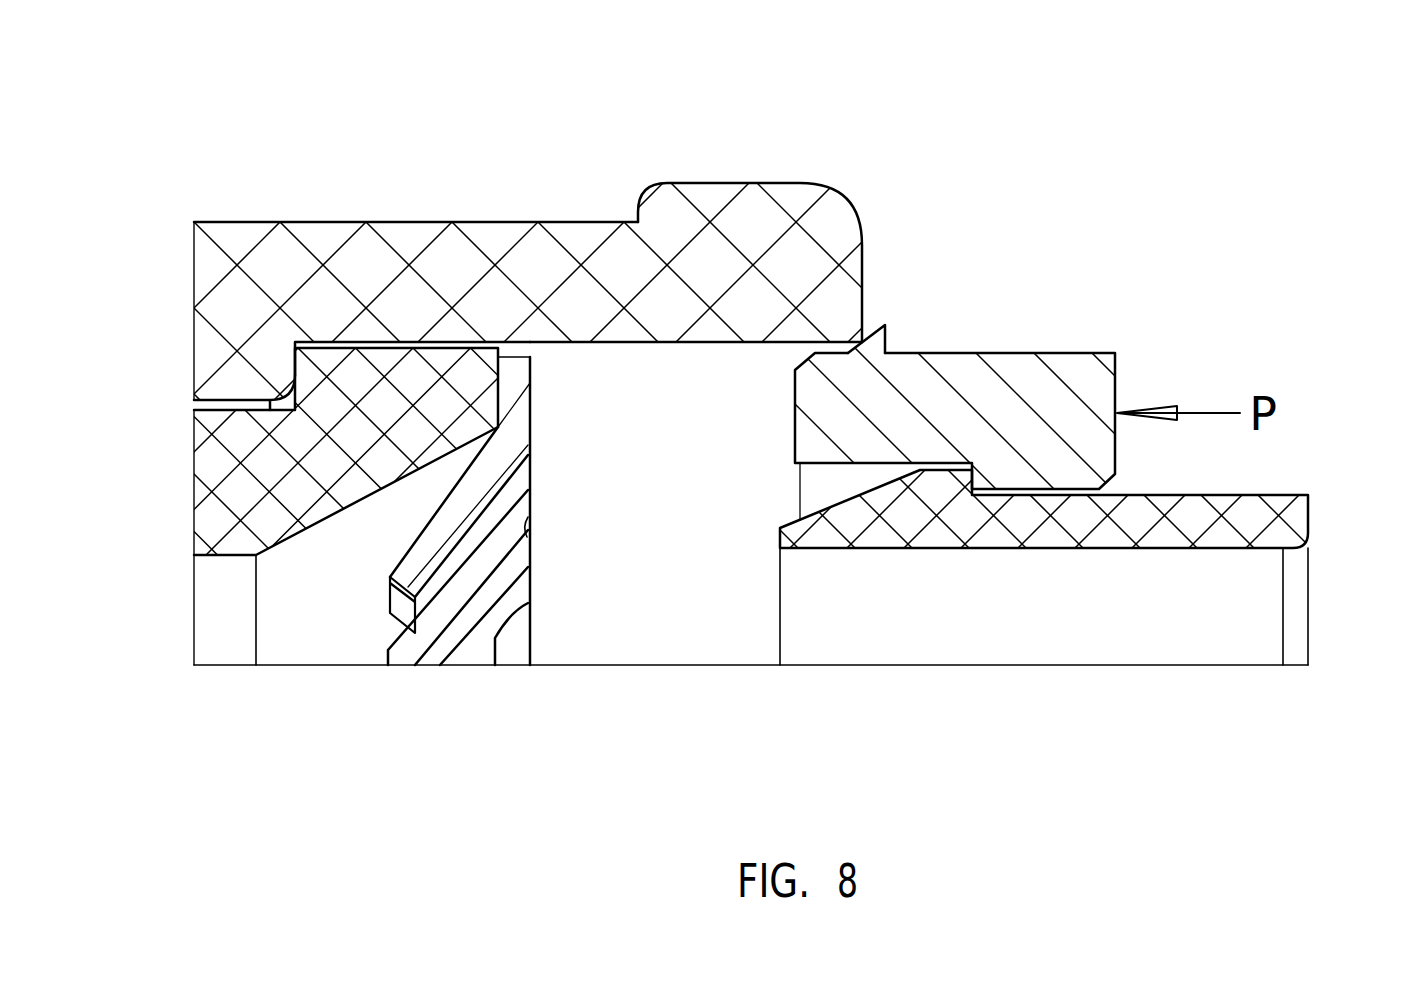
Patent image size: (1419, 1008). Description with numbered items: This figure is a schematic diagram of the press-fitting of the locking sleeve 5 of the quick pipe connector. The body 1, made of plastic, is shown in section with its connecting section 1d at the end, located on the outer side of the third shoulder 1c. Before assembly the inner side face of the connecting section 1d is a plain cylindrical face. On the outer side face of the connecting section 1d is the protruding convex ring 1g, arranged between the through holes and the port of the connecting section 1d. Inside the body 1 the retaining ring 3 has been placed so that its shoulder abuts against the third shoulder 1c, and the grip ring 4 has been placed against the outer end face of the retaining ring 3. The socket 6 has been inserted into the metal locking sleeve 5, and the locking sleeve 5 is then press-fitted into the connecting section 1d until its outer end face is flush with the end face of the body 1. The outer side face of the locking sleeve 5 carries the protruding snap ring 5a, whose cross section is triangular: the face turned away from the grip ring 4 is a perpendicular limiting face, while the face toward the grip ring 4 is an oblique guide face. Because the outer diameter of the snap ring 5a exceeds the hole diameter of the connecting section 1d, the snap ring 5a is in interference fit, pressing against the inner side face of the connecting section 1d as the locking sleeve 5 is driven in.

The body 1 is at (237, 253).
The third shoulder 1c is at (283, 372).
The connecting section 1d is at (610, 293).
The convex ring 1g is at (728, 195).
The retaining ring 3 is at (270, 472).
The grip ring 4 is at (522, 383).
The locking sleeve 5 is at (1012, 405).
The snap ring 5a is at (883, 343).
The socket 6 is at (1255, 532).